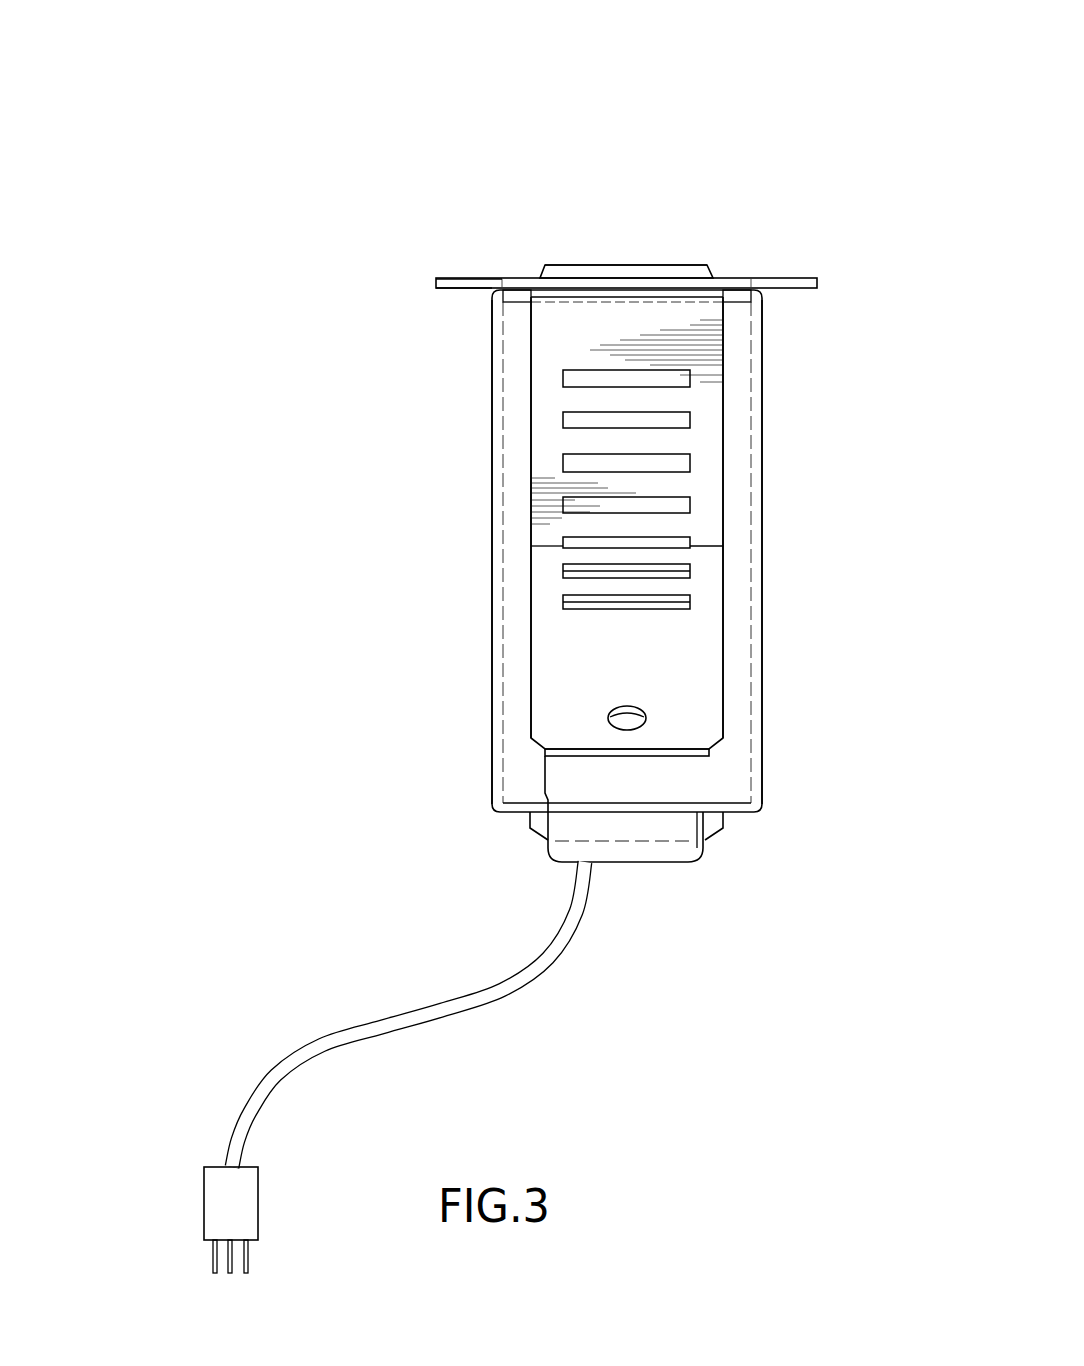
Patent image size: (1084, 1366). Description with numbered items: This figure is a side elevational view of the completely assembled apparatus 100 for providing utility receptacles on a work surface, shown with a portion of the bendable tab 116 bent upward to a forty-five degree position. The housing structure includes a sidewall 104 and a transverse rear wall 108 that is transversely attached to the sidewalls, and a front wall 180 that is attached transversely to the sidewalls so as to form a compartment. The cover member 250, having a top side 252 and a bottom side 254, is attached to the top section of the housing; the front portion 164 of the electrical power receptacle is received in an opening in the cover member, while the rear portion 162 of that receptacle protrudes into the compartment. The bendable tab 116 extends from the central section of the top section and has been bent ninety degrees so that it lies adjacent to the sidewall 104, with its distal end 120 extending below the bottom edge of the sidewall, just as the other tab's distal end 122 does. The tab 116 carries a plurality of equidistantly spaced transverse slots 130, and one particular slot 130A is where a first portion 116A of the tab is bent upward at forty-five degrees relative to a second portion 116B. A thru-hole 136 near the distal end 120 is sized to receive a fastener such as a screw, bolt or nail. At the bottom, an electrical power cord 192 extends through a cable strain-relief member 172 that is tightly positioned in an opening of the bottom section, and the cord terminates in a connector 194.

The apparatus 100 is at (796, 98).
The sidewall 104 is at (512, 747).
The transverse rear wall 108 is at (757, 492).
The bendable tab 116 is at (700, 652).
The first portion of the bendable tab 116A is at (553, 680).
The second portion of the bendable tab 116B is at (703, 443).
The distal end 120 is at (670, 757).
The distal end 122 is at (708, 840).
The transverse slots 130 is at (682, 379).
The particular transverse slot 130A is at (683, 540).
The thru-hole 136 is at (645, 718).
The rear portion 162 is at (668, 268).
The front portion 164 is at (578, 272).
The cable strain-relief member 172 is at (628, 870).
The front wall 180 is at (496, 495).
The electrical power cord 192 is at (327, 1033).
The connector 194 is at (205, 1200).
The cover member 250 is at (778, 282).
The top side 252 is at (473, 282).
The bottom side 254 is at (457, 290).